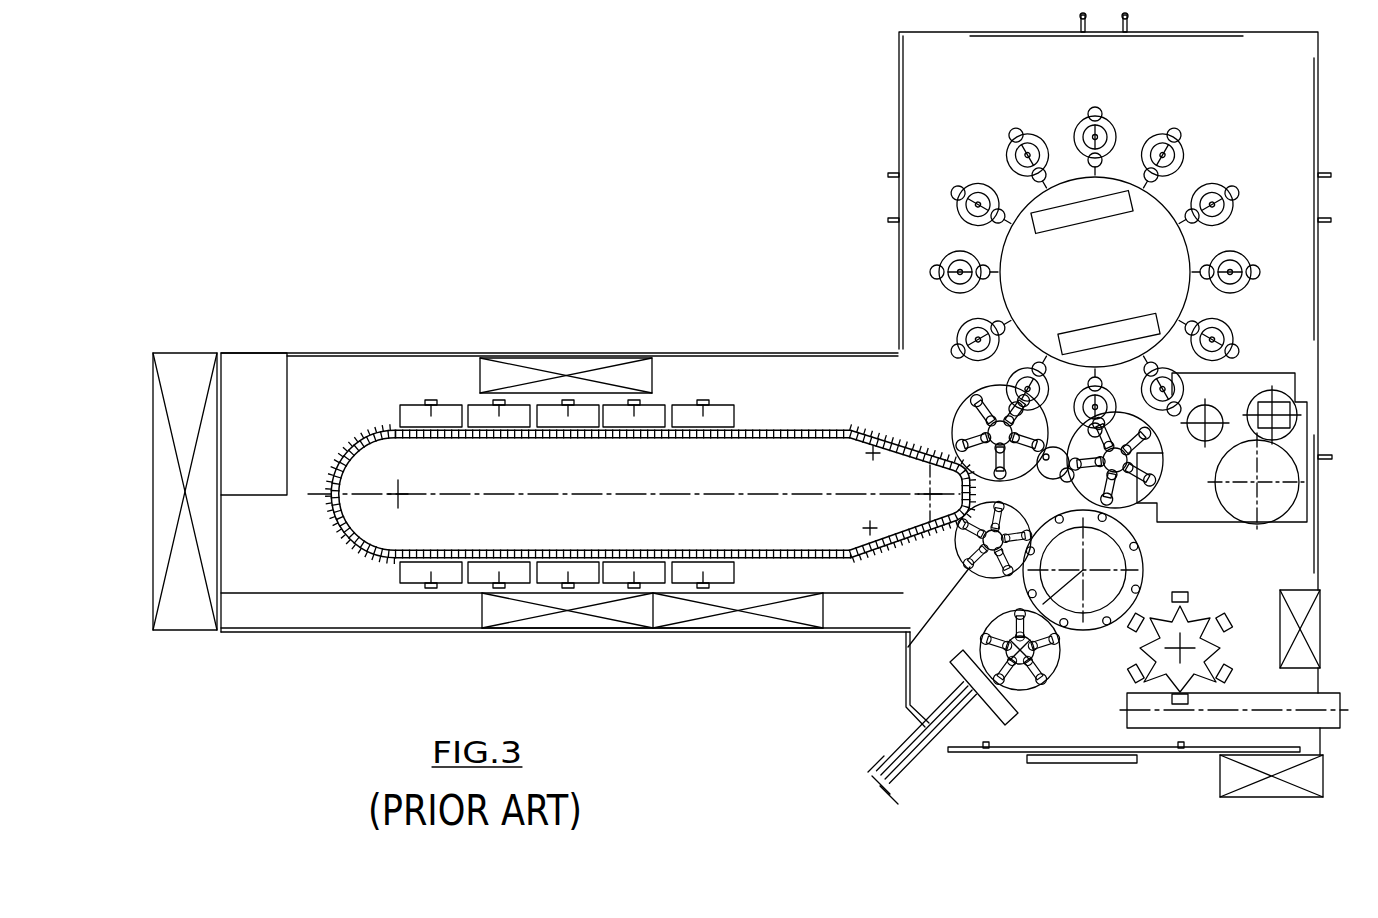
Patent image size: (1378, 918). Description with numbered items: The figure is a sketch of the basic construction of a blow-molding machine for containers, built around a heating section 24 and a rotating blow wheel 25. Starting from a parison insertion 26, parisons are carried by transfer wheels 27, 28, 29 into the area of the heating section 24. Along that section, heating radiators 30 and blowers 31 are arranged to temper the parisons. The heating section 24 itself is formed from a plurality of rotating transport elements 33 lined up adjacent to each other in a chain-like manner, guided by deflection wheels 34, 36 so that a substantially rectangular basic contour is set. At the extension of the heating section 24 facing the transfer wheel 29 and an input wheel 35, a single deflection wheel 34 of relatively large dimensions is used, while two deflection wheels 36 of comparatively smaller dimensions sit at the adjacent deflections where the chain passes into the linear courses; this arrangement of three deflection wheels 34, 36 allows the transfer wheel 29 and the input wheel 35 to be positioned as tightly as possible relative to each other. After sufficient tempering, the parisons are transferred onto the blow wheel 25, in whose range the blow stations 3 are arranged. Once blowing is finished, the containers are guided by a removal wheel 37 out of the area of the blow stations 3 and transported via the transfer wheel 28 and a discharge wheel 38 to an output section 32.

The blow stations 3 is at (947, 253).
The heating section 24 is at (690, 385).
The blow wheel 25 is at (1037, 187).
The parison insertion 26 is at (938, 755).
The transfer wheel 27 is at (1033, 693).
The transfer wheel 28 is at (1083, 643).
The transfer wheel 29 is at (908, 665).
The heating radiators 30 is at (447, 407).
The blowers 31 is at (560, 365).
The output section 32 is at (1330, 722).
The rotating transport elements 33 is at (373, 552).
The deflection wheel 34 is at (398, 494).
The input wheel 35 is at (973, 387).
The deflection wheels 36 is at (873, 455).
The removal wheel 37 is at (1167, 487).
The discharge wheel 38 is at (1190, 660).